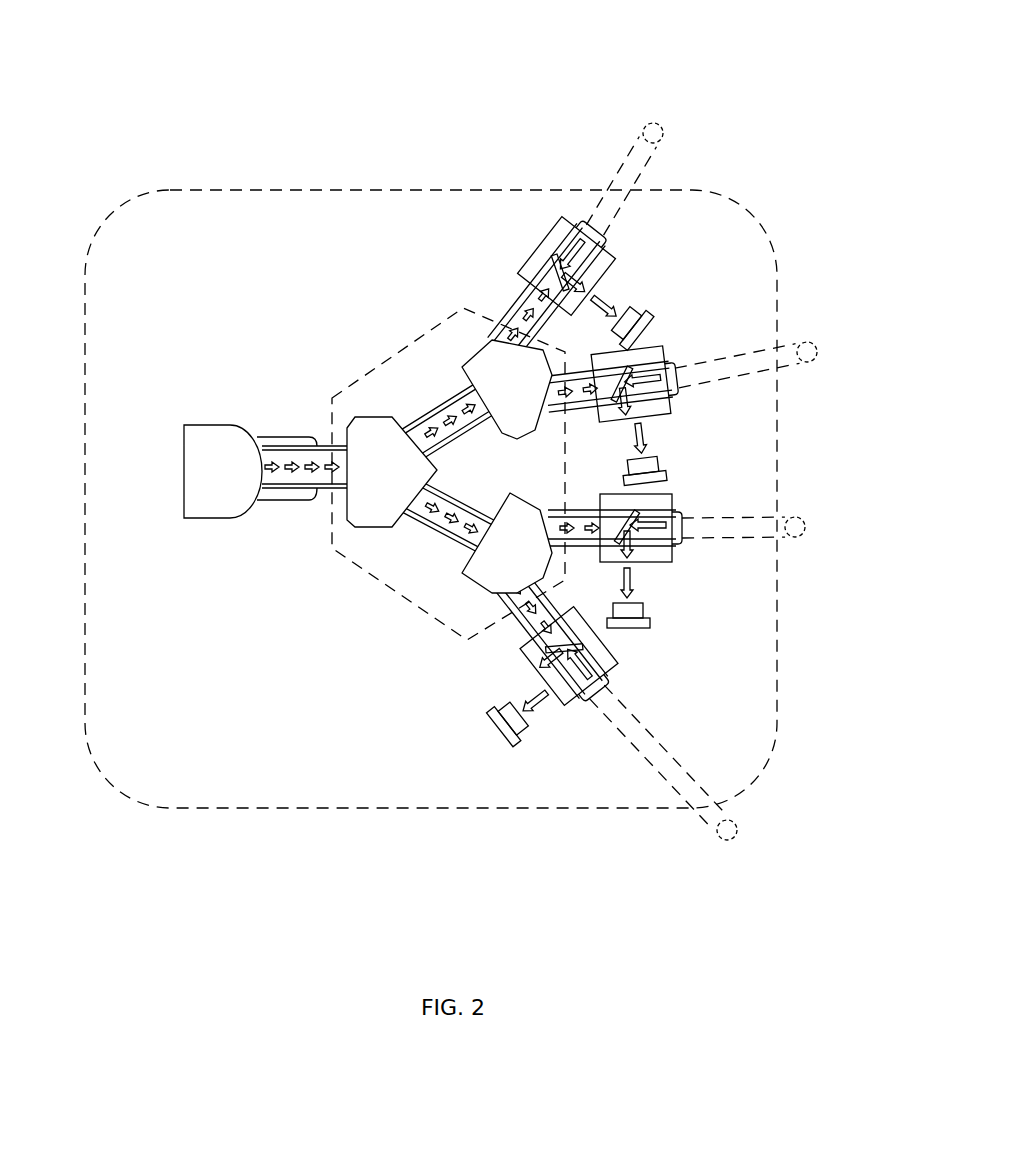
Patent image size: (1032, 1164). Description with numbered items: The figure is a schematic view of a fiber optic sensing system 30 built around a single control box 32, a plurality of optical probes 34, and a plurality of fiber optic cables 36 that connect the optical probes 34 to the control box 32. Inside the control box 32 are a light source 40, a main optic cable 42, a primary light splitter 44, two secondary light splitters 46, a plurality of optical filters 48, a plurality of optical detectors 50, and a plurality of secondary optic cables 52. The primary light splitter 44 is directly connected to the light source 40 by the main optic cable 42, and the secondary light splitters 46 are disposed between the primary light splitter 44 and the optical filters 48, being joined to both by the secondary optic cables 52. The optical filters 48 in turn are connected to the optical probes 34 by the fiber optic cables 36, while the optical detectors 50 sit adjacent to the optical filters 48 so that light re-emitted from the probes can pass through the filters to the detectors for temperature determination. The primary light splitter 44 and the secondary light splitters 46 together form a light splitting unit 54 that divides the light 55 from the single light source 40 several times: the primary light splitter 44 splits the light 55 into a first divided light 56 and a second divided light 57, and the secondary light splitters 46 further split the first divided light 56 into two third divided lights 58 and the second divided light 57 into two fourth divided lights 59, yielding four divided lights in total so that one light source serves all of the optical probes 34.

The fiber optic sensing system 30 is at (482, 76).
The control box 32 is at (410, 188).
The optical probes 34 is at (664, 134).
The fiber optic cables 36 is at (622, 158).
The light source 40 is at (207, 423).
The main optic cable 42 is at (285, 490).
The primary light splitter 44 is at (372, 417).
The secondary light splitters 46 is at (484, 436).
The optical filters 48 is at (544, 250).
The optical detectors 50 is at (638, 306).
The secondary optic cables 52 is at (528, 296).
The light splitting unit 54 is at (400, 345).
The light 55 is at (295, 462).
The first divided light 56 is at (447, 415).
The second divided light 57 is at (423, 510).
The third divided lights 58 is at (522, 322).
The fourth divided lights 59 is at (573, 540).